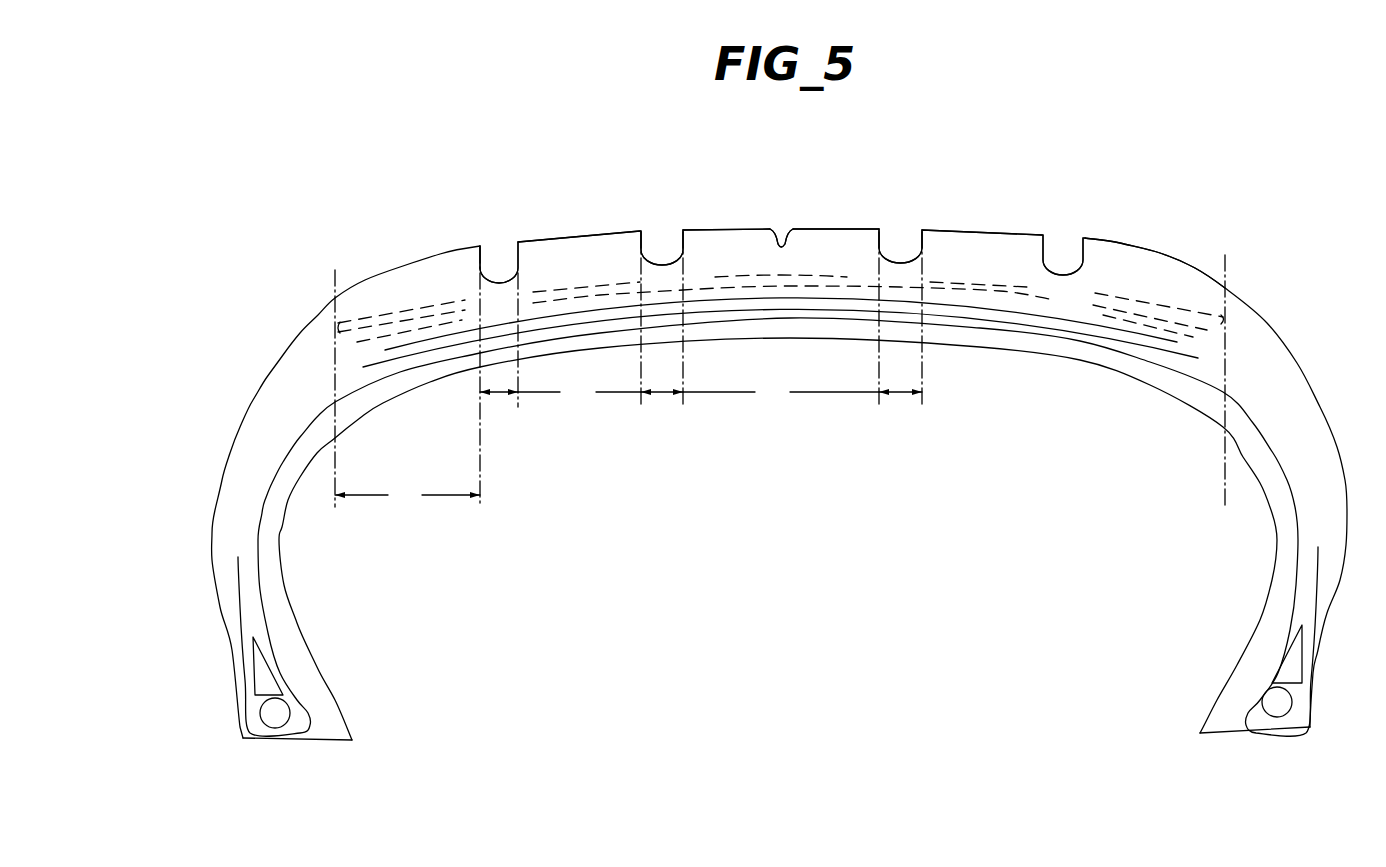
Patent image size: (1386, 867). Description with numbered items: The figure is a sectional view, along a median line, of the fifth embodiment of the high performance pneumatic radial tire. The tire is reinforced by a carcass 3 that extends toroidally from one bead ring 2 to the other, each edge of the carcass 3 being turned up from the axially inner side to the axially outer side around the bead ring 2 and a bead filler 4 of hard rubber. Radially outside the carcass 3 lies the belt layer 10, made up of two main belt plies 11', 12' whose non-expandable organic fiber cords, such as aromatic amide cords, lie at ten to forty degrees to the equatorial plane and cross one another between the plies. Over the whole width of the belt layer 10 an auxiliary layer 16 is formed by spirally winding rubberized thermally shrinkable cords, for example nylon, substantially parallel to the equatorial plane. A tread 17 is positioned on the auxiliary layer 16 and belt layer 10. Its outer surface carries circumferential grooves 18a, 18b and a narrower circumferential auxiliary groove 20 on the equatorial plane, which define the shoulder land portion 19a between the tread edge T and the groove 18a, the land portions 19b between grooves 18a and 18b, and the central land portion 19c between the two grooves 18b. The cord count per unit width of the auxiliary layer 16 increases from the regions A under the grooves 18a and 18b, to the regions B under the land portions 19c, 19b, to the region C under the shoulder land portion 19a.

The bead ring 2 is at (280, 713).
The carcass 3 is at (262, 512).
The bead filler 4 is at (267, 673).
The belt layer 10 is at (987, 332).
The main belt ply 11' is at (781, 353).
The main belt ply 12' is at (780, 362).
The auxiliary layer 16 is at (375, 318).
The tread 17 is at (978, 230).
The circumferential groove 18a is at (505, 247).
The circumferential groove 18b is at (662, 230).
The land portion 19a is at (1167, 255).
The land portion 19b is at (575, 233).
The land portion 19c is at (827, 228).
The circumferential auxiliary groove 20 is at (780, 230).
The tread edge T is at (337, 307).
The region A is at (701, 405).
The region B is at (698, 392).
The region C is at (407, 497).